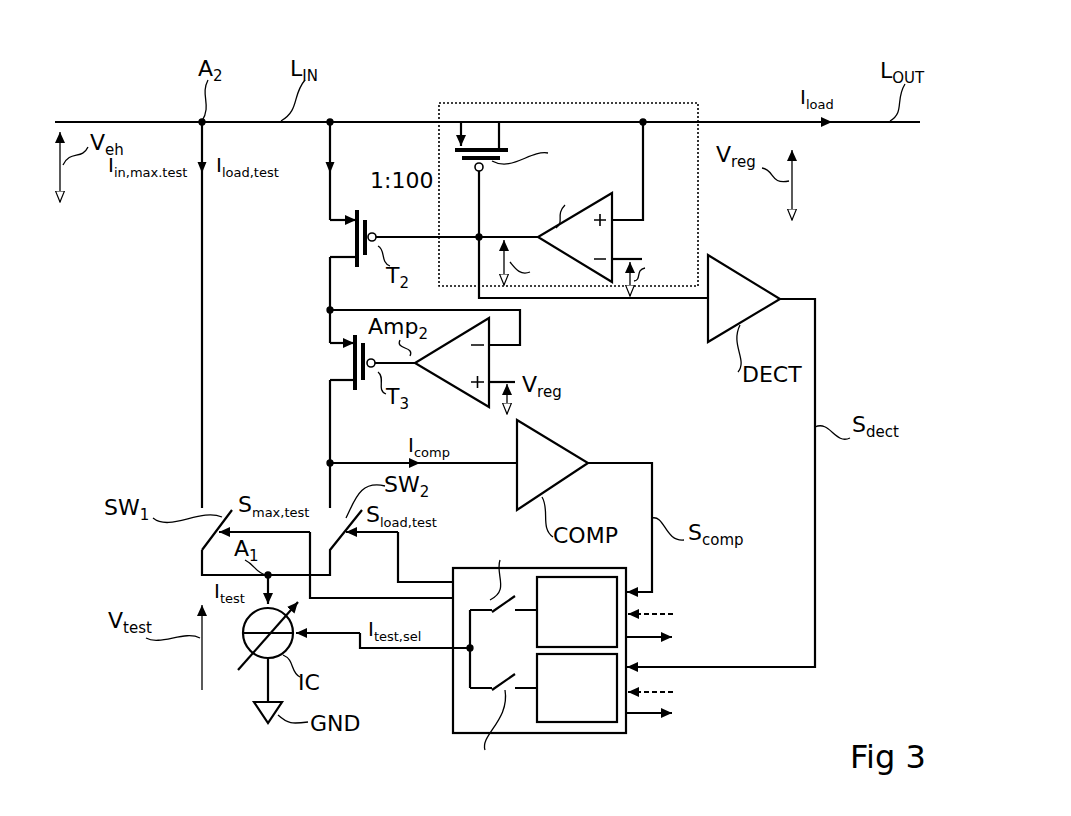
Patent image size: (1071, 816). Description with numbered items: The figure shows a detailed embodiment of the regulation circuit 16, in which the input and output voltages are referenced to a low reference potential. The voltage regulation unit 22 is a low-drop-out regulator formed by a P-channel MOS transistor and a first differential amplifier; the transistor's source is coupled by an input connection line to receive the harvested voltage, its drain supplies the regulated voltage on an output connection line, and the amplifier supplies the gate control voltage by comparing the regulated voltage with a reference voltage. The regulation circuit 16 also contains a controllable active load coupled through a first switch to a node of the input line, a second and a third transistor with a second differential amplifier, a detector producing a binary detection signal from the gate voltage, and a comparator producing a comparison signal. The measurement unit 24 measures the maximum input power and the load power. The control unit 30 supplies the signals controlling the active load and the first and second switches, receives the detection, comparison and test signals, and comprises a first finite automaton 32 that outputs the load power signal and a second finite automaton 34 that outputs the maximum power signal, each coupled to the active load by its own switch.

The regulation circuit 16 is at (786, 52).
The voltage regulation unit 22 is at (563, 103).
The measurement unit 24 is at (641, 740).
The control unit 30 is at (528, 734).
The finite automaton 32 is at (592, 620).
The finite automaton 34 is at (592, 723).